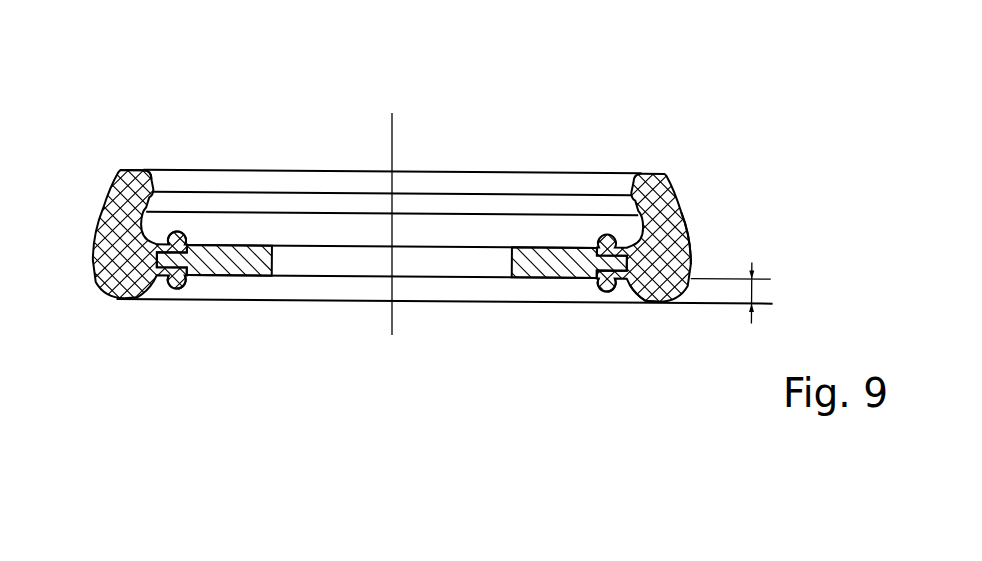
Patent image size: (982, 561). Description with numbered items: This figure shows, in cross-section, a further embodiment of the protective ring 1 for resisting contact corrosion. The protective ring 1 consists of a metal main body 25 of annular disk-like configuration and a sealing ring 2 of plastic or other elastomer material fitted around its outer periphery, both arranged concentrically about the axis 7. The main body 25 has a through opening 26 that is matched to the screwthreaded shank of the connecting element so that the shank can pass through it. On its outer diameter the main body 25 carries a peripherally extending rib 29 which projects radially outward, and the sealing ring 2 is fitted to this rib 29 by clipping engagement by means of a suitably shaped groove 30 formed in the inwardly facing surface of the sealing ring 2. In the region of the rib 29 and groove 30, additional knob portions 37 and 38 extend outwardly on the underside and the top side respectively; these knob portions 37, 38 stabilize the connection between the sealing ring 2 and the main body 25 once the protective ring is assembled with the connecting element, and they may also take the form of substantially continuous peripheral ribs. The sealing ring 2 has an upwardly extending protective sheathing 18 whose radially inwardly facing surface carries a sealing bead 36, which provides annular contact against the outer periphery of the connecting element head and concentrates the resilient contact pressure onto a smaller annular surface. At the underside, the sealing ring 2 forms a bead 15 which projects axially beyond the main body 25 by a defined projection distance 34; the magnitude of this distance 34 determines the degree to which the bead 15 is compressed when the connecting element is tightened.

The protective ring 1 is at (704, 168).
The sealing ring 2 is at (657, 207).
The axis 7 is at (392, 140).
The bead 15 is at (660, 300).
The protective sheathing 18 is at (112, 200).
The main body 25 is at (535, 262).
The through opening 26 is at (333, 262).
The peripherally extending rib 29 is at (622, 280).
The groove 30 is at (690, 244).
The projection distance 34 is at (753, 293).
The sealing bead 36 is at (140, 172).
The knob portion 37 is at (178, 285).
The knob portion 38 is at (179, 232).